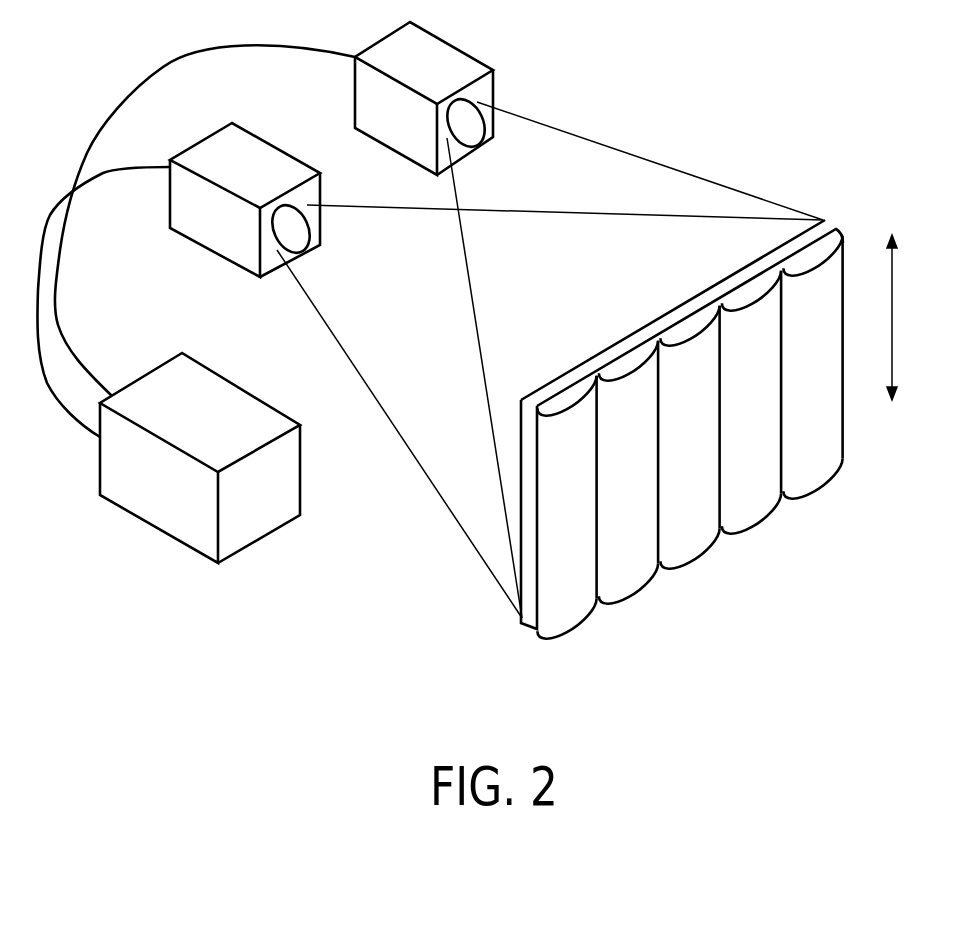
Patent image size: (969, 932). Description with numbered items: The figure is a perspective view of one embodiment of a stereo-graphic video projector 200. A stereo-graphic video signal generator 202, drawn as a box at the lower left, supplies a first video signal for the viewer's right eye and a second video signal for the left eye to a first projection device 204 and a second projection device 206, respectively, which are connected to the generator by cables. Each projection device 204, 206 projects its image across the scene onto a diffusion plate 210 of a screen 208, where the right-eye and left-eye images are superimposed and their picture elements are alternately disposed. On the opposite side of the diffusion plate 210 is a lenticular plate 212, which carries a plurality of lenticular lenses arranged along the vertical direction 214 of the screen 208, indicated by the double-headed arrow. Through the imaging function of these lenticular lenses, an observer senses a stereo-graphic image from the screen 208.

The stereo-graphic video projector 200 is at (727, 41).
The stereo-graphic video signal generator 202 is at (198, 527).
The first projection device 204 is at (213, 257).
The second projection device 206 is at (478, 55).
The screen 208 is at (648, 390).
The diffusion plate 210 is at (528, 552).
The lenticular plate 212 is at (628, 583).
The vertical direction 214 is at (893, 360).